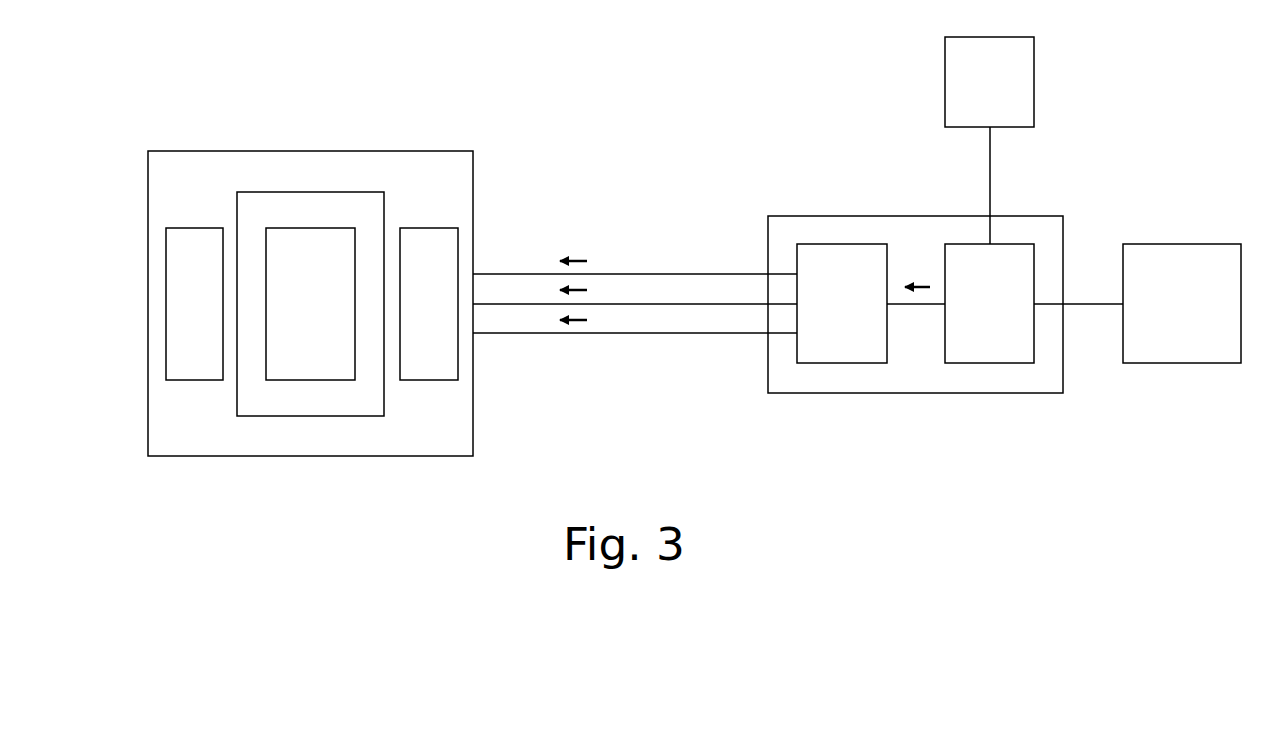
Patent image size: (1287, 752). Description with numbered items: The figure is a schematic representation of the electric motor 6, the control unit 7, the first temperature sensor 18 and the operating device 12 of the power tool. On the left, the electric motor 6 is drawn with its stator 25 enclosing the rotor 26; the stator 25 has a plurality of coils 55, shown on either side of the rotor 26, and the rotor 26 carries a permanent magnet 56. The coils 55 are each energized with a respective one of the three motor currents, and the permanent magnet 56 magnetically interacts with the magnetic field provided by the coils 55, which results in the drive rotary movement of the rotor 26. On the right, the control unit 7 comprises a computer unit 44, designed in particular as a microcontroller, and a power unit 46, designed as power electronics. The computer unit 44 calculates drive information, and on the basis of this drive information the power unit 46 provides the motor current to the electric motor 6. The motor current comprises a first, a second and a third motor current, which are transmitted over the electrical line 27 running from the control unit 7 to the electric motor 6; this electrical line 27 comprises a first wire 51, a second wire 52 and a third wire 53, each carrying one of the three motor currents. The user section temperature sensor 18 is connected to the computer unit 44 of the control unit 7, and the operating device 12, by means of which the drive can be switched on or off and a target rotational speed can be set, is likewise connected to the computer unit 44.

The electric motor 6 is at (156, 126).
The stator 25 is at (243, 152).
The rotor 26 is at (315, 191).
The coils 55 is at (432, 240).
The permanent magnet 56 is at (310, 304).
The electrical line 27 is at (546, 355).
The first wire 51 is at (662, 273).
The second wire 52 is at (685, 303).
The third wire 53 is at (708, 333).
The control unit 7 is at (806, 205).
The power unit 46 is at (842, 303).
The computer unit 44 is at (989, 303).
The user section temperature sensor 18 is at (989, 140).
The operating device 12 is at (1137, 303).